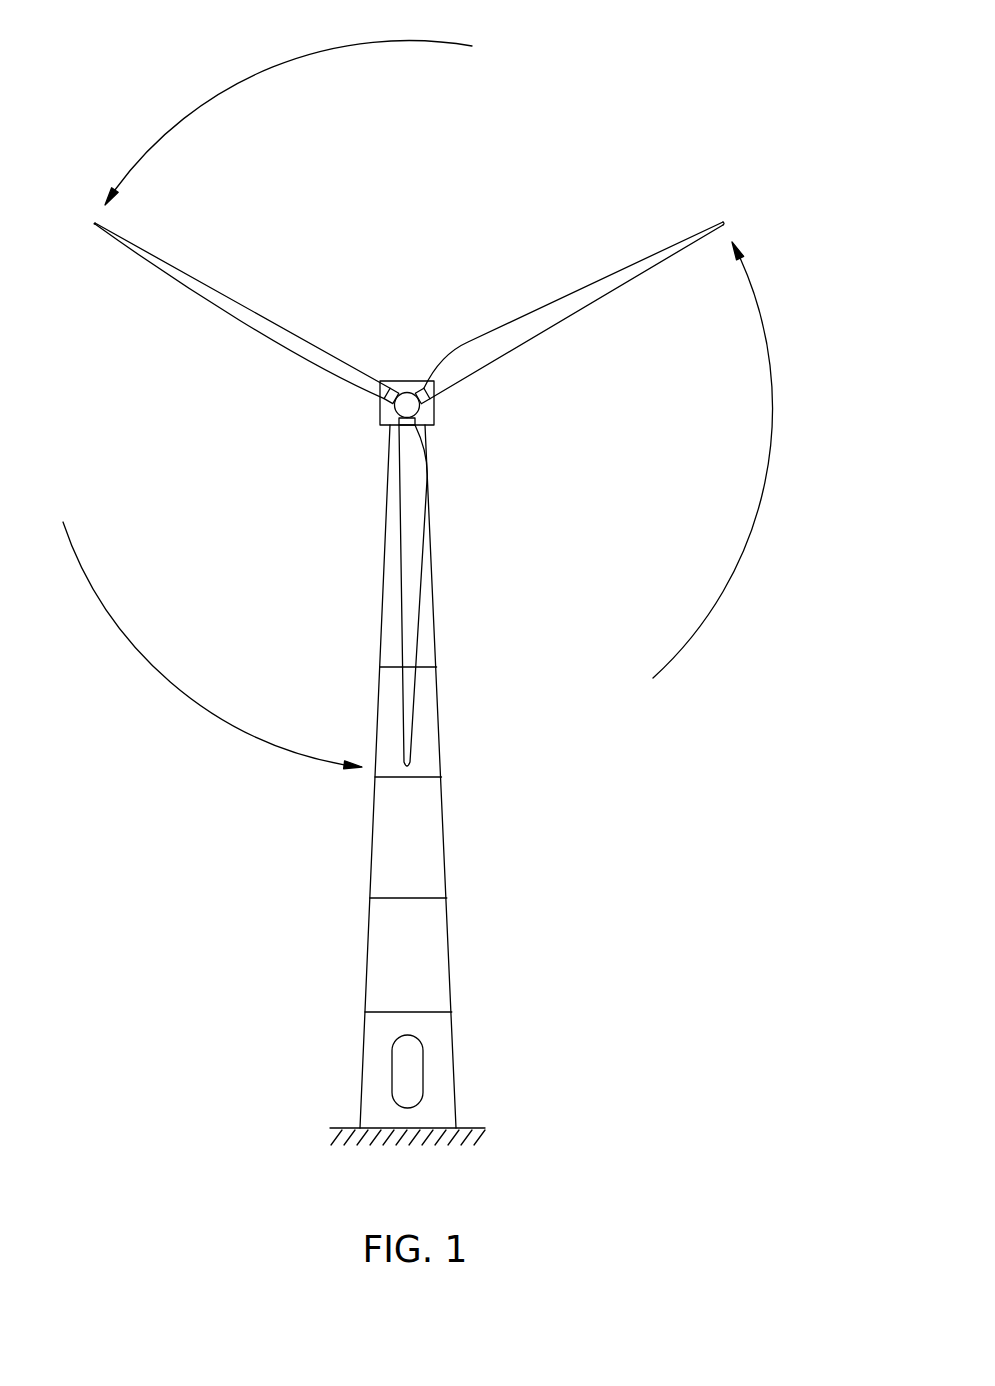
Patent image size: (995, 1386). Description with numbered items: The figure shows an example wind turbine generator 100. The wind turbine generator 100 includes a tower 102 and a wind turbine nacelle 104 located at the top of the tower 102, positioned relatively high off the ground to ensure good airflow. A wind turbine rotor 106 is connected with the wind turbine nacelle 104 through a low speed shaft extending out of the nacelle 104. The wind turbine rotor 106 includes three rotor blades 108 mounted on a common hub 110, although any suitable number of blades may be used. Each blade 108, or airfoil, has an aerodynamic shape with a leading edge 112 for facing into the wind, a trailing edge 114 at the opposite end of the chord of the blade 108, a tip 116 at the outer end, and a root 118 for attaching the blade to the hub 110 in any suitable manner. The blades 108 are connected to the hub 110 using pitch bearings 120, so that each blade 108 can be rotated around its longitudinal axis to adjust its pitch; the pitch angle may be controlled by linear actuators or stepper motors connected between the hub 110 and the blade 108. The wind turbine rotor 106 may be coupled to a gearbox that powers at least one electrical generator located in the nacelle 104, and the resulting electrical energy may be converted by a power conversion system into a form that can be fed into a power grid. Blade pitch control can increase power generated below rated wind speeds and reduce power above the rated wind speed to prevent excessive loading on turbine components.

The wind turbine generator 100 is at (327, 965).
The tower 102 is at (425, 848).
The wind turbine nacelle 104 is at (440, 427).
The wind turbine rotor 106 is at (337, 422).
The rotor blades 108 is at (210, 303).
The hub 110 is at (405, 398).
The leading edge 112 is at (597, 302).
The trailing edge 114 is at (620, 272).
The tip 116 is at (740, 201).
The root 118 is at (465, 408).
The pitch bearings 120 is at (382, 392).